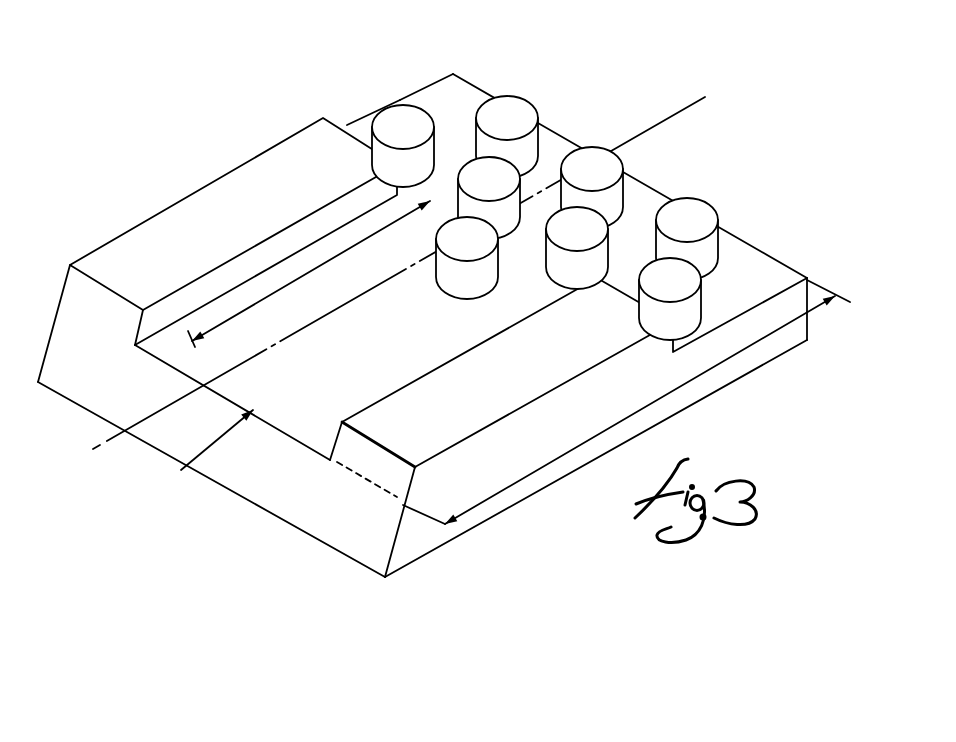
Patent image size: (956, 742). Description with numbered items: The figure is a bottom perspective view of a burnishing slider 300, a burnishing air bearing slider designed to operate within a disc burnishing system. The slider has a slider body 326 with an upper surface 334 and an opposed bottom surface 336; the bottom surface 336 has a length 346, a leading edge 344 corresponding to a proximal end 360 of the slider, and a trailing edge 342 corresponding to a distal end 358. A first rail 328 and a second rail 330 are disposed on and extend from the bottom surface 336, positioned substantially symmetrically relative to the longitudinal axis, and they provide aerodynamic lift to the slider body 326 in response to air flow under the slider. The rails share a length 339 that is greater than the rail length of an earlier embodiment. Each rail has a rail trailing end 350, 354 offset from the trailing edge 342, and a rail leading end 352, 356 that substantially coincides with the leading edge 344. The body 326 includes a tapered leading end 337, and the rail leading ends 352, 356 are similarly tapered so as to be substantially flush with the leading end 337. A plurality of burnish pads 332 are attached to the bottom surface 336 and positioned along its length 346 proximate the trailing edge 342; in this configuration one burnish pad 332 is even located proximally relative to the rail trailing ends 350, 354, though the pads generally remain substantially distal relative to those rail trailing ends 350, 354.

The burnishing slider 300 is at (810, 224).
The slider body 326 is at (652, 179).
The first rail 328 is at (515, 381).
The second rail 330 is at (200, 213).
The burnish pads 332 is at (607, 173).
The upper surface 334 is at (153, 452).
The bottom surface 336 is at (420, 340).
The tapered leading end 337 is at (377, 525).
The length 339 is at (312, 270).
The trailing edge 342 is at (454, 75).
The leading edge 344 is at (287, 470).
The length 346 is at (657, 398).
The rail trailing end 350 is at (664, 318).
The rail leading end 352 is at (390, 472).
The rail trailing end 354 is at (343, 127).
The rail leading end 356 is at (95, 293).
The distal end 358 is at (555, 137).
The proximal end 360 is at (200, 463).